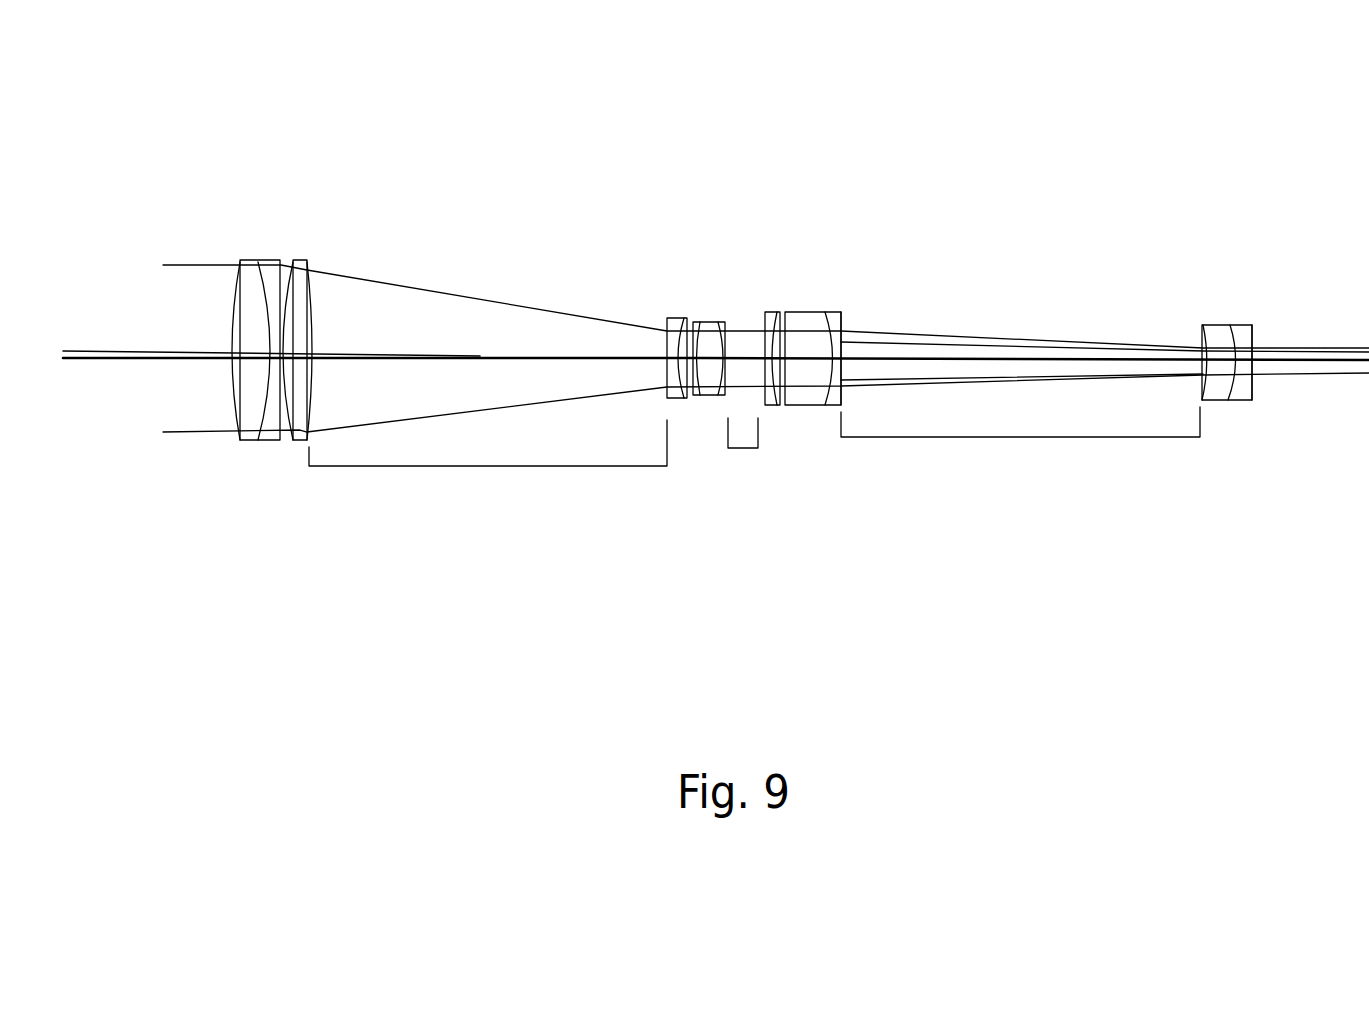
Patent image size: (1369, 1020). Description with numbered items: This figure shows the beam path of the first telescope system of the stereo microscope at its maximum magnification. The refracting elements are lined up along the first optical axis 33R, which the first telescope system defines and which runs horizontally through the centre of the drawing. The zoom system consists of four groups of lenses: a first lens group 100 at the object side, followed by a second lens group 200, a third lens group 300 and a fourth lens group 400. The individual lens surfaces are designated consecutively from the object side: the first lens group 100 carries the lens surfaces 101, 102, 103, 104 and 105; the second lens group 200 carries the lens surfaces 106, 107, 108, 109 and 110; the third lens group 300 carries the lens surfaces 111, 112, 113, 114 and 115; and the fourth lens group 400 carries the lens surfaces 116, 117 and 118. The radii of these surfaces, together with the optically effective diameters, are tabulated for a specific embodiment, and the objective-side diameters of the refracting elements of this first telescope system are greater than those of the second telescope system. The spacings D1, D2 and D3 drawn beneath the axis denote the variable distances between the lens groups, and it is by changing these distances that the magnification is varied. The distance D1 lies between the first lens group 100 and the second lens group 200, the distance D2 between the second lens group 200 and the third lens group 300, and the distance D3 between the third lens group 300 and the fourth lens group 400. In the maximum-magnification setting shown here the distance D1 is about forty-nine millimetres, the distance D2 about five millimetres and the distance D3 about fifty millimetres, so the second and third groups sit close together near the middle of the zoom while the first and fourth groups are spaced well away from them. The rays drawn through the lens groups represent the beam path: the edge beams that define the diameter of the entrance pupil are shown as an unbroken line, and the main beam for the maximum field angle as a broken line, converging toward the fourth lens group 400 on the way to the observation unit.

The first optical axis 33R is at (137, 351).
The first lens group 100 is at (240, 430).
The lens surface 101 is at (180, 407).
The lens surface 102 is at (250, 412).
The lens surface 103 is at (270, 413).
The lens surface 104 is at (292, 420).
The lens surface 105 is at (313, 420).
The lens surface 106 is at (667, 347).
The lens surface 107 is at (667, 335).
The lens surface 108 is at (681, 336).
The lens surface 109 is at (707, 393).
The lens surface 110 is at (717, 393).
The second lens group 200 is at (600, 353).
The lens surface 111 is at (762, 328).
The lens surface 112 is at (765, 327).
The lens surface 113 is at (772, 404).
The lens surface 114 is at (813, 404).
The lens surface 115 is at (842, 378).
The third lens group 300 is at (855, 355).
The lens surface 116 is at (1200, 330).
The lens surface 117 is at (1232, 390).
The lens surface 118 is at (1252, 387).
The fourth lens group 400 is at (1203, 355).
The variable distance between first and second lens groups D1 is at (457, 466).
The variable distance between second and third lens groups D2 is at (743, 448).
The variable distance between third and fourth lens groups D3 is at (985, 438).